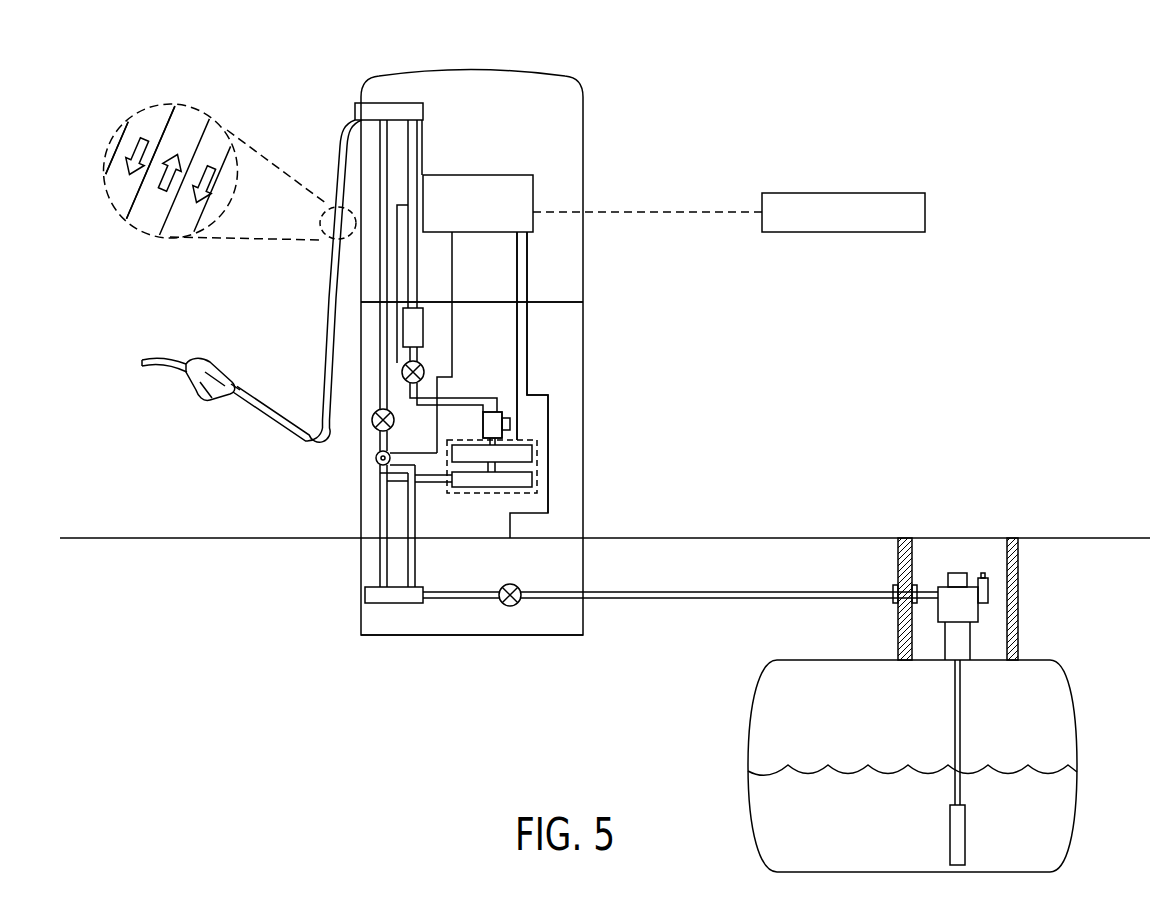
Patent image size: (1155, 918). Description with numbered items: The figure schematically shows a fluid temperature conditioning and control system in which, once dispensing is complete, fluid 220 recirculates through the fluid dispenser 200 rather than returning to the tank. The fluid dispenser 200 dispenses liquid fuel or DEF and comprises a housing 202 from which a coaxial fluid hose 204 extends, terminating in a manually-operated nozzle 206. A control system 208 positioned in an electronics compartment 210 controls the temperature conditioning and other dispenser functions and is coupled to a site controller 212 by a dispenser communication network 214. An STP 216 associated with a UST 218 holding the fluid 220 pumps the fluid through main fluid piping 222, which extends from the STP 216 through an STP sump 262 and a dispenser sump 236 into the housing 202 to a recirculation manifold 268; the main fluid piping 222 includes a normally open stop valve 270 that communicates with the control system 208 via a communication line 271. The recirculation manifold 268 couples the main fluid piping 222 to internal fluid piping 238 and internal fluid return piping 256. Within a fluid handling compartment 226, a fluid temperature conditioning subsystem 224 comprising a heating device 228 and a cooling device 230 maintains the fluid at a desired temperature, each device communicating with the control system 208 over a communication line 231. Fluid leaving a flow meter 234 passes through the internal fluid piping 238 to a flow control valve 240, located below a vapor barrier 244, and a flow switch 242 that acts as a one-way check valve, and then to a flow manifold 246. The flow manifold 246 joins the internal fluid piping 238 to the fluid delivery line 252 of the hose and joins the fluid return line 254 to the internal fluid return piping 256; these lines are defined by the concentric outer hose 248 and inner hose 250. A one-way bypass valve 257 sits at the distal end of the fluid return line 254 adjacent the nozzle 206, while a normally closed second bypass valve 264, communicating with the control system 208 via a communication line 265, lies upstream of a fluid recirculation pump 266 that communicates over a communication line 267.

The fluid dispenser 200 is at (608, 86).
The housing 202 is at (586, 146).
The coaxial fluid hose 204 is at (262, 412).
The nozzle 206 is at (190, 382).
The control system 208 is at (466, 175).
The electronics compartment 210 is at (566, 282).
The site controller 212 is at (882, 193).
The dispenser communication network 214 is at (690, 212).
The STP 216 is at (976, 548).
The UST 218 is at (1043, 660).
The fluid 220 is at (1065, 800).
The main fluid piping 222 is at (698, 598).
The fluid temperature conditioning subsystem 224 is at (540, 490).
The fluid handling compartment 226 is at (566, 338).
The heating device 228 is at (533, 452).
The cooling device 230 is at (533, 478).
The communication line 231 is at (518, 332).
The flow meter 234 is at (464, 424).
The dispenser sump 236 is at (360, 630).
The internal fluid piping 238 is at (466, 402).
The flow control valve 240 is at (420, 368).
The flow switch 242 is at (413, 328).
The vapor barrier 244 is at (533, 300).
The flow manifold 246 is at (392, 103).
The outer hose 248 is at (122, 132).
The inner hose 250 is at (140, 184).
The fluid delivery line 252 is at (155, 113).
The fluid return line 254 is at (192, 113).
The internal fluid return piping 256 is at (380, 278).
The bypass valve 257 is at (238, 385).
The STP sump 262 is at (1014, 574).
The second bypass valve 264 is at (372, 420).
The communication line 265 is at (397, 363).
The fluid recirculation pump 266 is at (378, 462).
The communication line 267 is at (437, 422).
The recirculation manifold 268 is at (368, 590).
The stop valve 270 is at (512, 606).
The communication line 271 is at (528, 357).